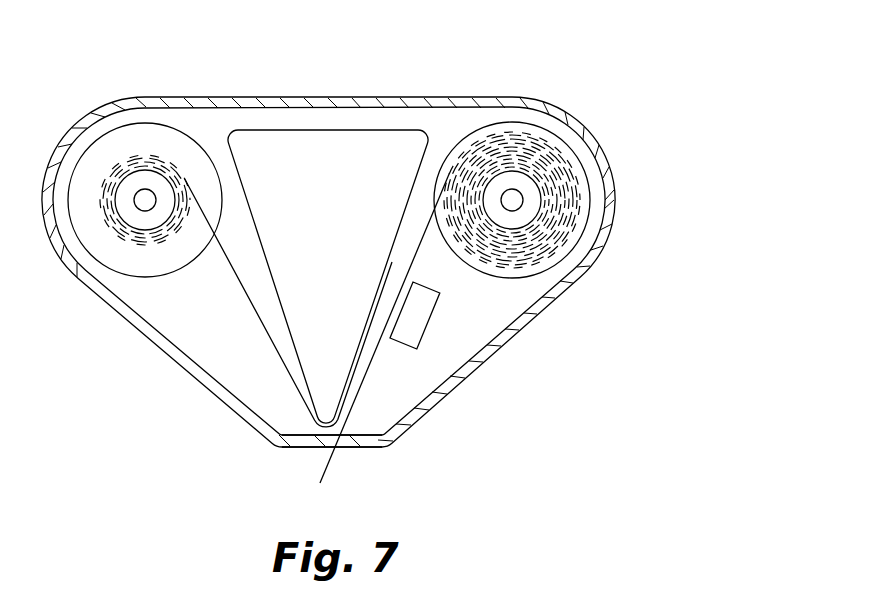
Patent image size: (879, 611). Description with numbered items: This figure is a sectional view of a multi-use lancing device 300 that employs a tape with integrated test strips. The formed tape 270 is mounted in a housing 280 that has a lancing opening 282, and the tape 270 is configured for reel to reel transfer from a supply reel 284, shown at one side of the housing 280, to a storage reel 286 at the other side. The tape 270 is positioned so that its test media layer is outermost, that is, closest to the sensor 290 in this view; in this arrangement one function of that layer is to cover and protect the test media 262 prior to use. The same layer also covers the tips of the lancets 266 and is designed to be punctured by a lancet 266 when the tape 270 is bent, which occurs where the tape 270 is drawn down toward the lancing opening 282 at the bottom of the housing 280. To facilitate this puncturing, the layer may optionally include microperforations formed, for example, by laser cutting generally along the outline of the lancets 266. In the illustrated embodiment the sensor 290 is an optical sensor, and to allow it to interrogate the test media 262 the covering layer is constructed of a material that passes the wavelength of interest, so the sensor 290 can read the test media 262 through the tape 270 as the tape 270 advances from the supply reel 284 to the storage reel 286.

The tape dispensing cartridge assembly 300 is at (606, 57).
The housing 280 is at (505, 356).
The lancing opening 282 is at (315, 450).
The supply reel 284 is at (137, 157).
The storage reel 286 is at (570, 222).
The tape 270 is at (238, 282).
The test media 262 is at (310, 423).
The lancet 266 is at (333, 460).
The sensor 290 is at (410, 322).